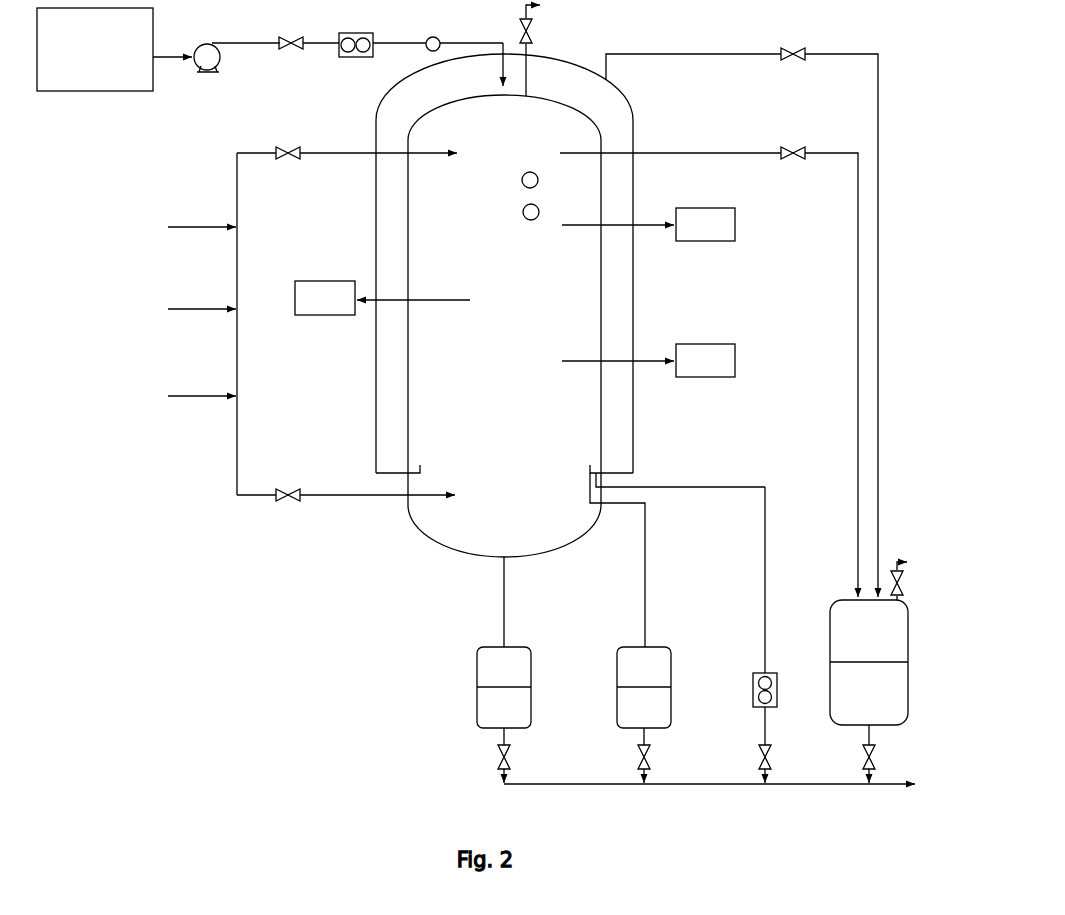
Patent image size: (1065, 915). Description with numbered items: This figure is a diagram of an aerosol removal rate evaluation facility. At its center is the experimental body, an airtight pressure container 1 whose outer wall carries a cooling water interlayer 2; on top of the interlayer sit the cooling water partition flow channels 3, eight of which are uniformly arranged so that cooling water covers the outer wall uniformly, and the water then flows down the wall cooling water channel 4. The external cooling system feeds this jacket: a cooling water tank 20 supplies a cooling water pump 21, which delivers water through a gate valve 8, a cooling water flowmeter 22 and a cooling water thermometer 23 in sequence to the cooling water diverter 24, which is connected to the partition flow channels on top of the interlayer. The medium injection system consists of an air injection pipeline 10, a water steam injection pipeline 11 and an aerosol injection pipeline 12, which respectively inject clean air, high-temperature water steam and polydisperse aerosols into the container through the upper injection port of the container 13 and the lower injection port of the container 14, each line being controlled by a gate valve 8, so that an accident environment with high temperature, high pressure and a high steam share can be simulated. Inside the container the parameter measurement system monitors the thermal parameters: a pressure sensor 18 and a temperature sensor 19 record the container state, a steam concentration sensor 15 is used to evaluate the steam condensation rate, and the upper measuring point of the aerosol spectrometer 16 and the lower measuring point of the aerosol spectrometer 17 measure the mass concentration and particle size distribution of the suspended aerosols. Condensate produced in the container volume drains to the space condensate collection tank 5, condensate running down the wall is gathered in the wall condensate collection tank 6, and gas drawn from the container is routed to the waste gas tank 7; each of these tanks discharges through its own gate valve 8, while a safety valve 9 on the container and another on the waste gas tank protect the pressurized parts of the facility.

The airtight pressure container 1 is at (515, 323).
The cooling water interlayer 2 is at (630, 115).
The cooling water partition flow channel at the top of the interlayer 3 is at (541, 98).
The wall cooling water channel 4 is at (424, 467).
The space condensate collection tank 5 is at (514, 660).
The wall condensate collection tank 6 is at (641, 660).
The waste gas tank 7 is at (900, 697).
The gate valve 8 is at (295, 39).
The safety valve 9 is at (531, 38).
The air injection pipeline 10 is at (182, 228).
The water steam injection pipeline 11 is at (182, 310).
The aerosol injection pipeline 12 is at (182, 397).
The upper injection port of the container 13 is at (455, 149).
The lower injection port of the container 14 is at (458, 494).
The steam concentration sensor 15 is at (320, 307).
The upper measuring point of the aerosol spectrometer 16 is at (722, 235).
The lower measuring point of the aerosol spectrometer 17 is at (720, 352).
The pressure sensor 18 is at (523, 188).
The temperature sensor 19 is at (526, 222).
The cooling water tank 20 is at (100, 91).
The cooling water pump 21 is at (208, 44).
The cooling water flowmeter 22 is at (370, 34).
The cooling water thermometer 23 is at (438, 38).
The cooling water diverter 24 is at (500, 83).